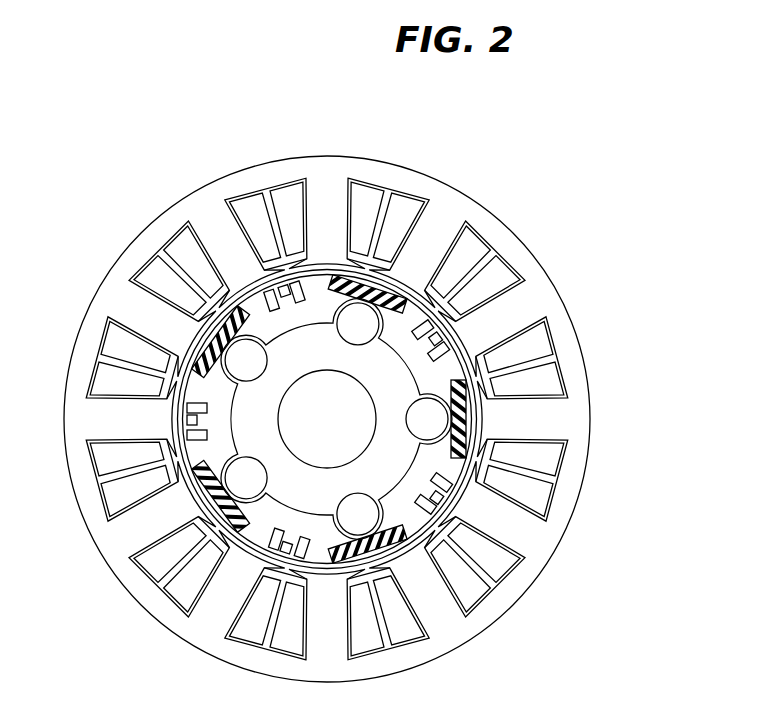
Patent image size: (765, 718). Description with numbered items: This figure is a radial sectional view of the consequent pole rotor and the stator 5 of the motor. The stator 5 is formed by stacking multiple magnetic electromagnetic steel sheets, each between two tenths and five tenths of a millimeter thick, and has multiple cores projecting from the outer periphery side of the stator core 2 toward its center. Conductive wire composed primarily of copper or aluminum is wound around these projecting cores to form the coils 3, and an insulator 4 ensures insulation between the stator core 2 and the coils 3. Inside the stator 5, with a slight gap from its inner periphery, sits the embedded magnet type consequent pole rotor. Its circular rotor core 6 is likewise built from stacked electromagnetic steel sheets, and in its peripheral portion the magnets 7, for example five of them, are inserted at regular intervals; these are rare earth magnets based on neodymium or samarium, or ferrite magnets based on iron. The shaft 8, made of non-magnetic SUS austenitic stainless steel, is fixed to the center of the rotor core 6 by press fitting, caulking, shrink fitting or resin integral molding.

The stator core 2 is at (440, 228).
The coils 3 is at (363, 202).
The insulator 4 is at (250, 192).
The stator 5 is at (592, 386).
The rotor core 6 is at (430, 458).
The magnets 7 is at (390, 553).
The shaft 8 is at (300, 398).